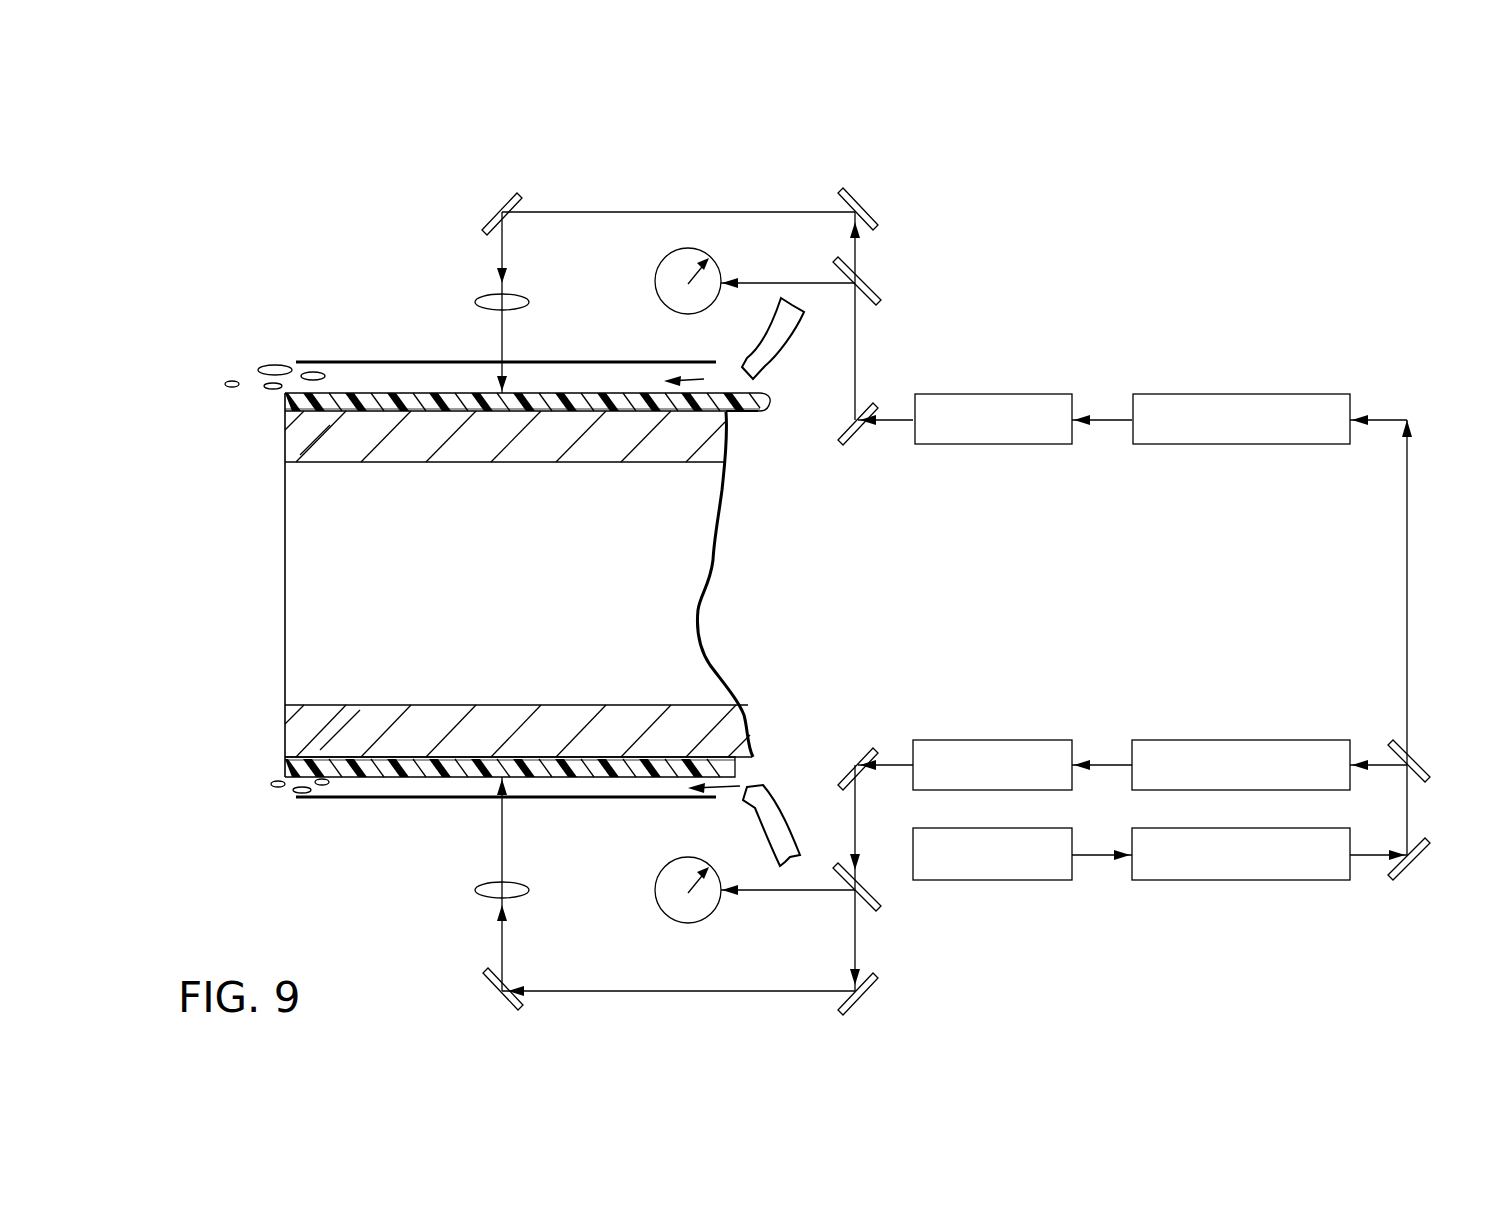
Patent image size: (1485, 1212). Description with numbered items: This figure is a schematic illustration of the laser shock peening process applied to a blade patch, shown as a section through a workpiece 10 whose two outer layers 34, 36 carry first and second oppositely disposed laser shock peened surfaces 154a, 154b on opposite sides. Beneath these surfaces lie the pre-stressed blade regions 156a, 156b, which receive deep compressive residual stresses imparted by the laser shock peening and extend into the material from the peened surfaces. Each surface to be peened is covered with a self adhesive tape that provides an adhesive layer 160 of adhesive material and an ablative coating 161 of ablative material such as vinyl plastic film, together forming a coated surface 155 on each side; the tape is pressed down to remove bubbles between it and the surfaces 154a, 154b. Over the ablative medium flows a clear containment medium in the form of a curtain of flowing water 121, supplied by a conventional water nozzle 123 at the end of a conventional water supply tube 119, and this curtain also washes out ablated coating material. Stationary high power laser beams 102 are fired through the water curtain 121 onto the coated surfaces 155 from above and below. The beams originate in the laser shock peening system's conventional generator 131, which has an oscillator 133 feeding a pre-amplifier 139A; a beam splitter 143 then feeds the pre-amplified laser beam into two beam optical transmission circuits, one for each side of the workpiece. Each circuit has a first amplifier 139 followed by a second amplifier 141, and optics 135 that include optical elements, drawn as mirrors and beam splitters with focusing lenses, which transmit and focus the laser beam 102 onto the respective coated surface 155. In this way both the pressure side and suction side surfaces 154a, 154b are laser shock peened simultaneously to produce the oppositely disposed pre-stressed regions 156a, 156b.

The workpiece 10 is at (535, 592).
The first layer of workpiece 34 is at (475, 464).
The second layer of workpiece 36 is at (464, 704).
The high power laser beam 102 is at (503, 347).
The water supply tube 119 is at (786, 819).
The curtain of flowing water 121 is at (592, 793).
The water nozzle 123 is at (745, 805).
The generator 131 is at (1136, 592).
The oscillator 133 is at (1020, 880).
The optics 135 is at (893, 266).
The first amplifier 139 is at (1227, 394).
The pre-amplifier 139A is at (1196, 880).
The second amplifier 141 is at (965, 394).
The beam splitter 143 is at (1452, 830).
The first laser shock peened surface 154a is at (287, 395).
The second laser shock peened surface 154b is at (744, 758).
The coated surface 155 is at (438, 380).
The first pre-stressed blade region 156a is at (338, 440).
The second pre-stressed blade region 156b is at (360, 713).
The adhesive layer 160 is at (746, 413).
The ablative coating 161 is at (762, 400).